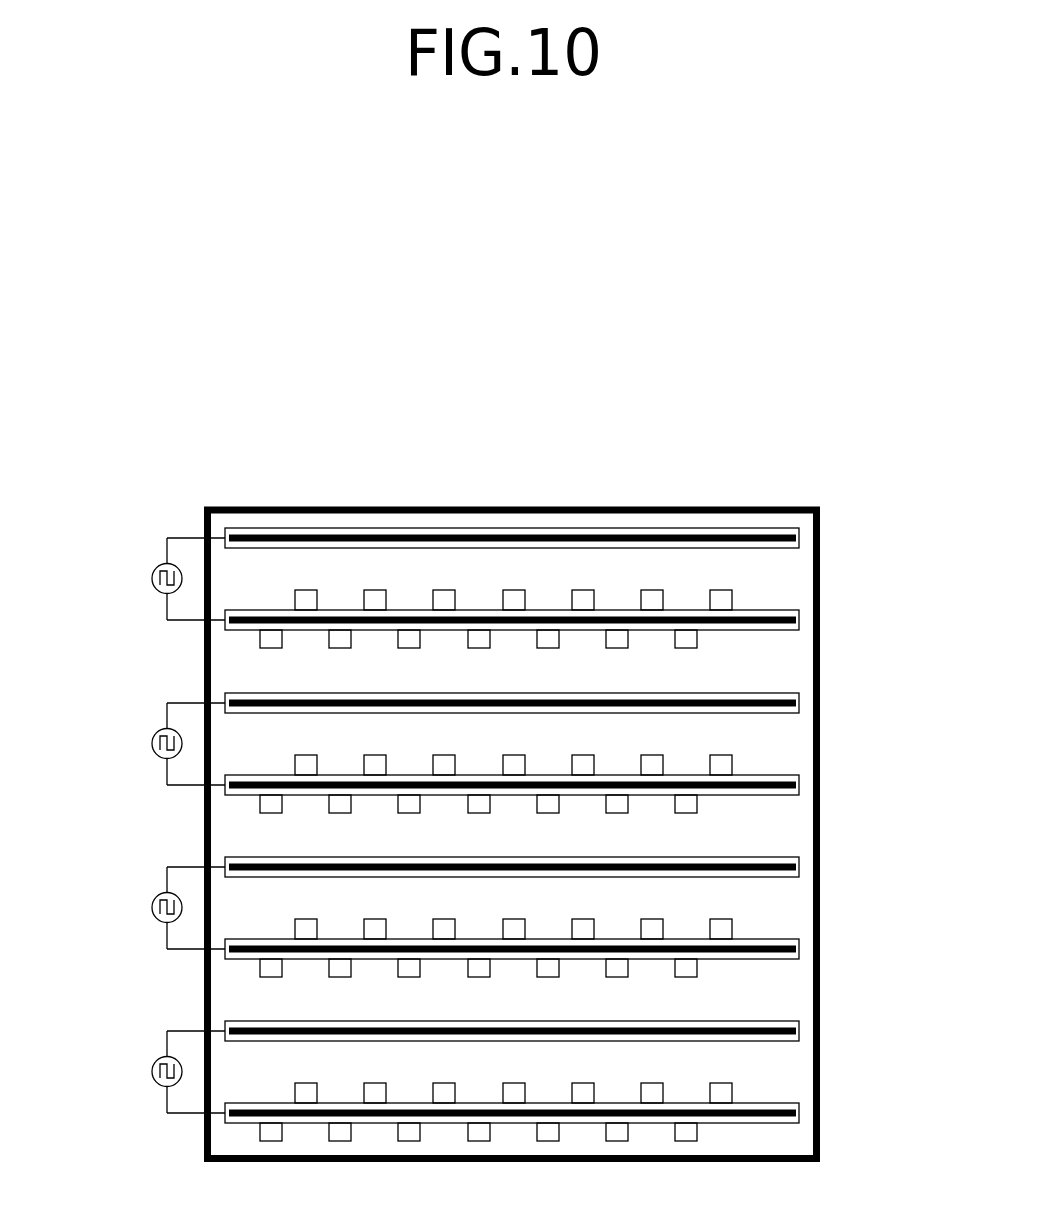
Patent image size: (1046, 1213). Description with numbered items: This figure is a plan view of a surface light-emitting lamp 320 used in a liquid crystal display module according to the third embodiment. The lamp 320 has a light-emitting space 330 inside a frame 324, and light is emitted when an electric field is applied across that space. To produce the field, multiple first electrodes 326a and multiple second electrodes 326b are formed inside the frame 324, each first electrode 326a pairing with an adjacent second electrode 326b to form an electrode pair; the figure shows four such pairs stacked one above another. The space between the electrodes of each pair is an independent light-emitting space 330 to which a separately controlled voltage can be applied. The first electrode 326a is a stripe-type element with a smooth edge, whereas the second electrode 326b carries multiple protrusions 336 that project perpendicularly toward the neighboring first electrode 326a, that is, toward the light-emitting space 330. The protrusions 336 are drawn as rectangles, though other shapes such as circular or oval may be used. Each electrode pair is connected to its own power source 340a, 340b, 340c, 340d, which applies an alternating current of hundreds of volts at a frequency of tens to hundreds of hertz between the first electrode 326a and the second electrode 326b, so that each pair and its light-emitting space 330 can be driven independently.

The surface light-emitting lamp 320 is at (775, 391).
The frame 324 is at (820, 708).
The first electrode 326a is at (366, 528).
The second electrode 326b is at (548, 609).
The light-emitting space 330 is at (455, 568).
The protrusions 336 is at (662, 590).
The power source 340a is at (156, 567).
The power source 340b is at (156, 734).
The power source 340c is at (156, 900).
The power source 340d is at (156, 1064).